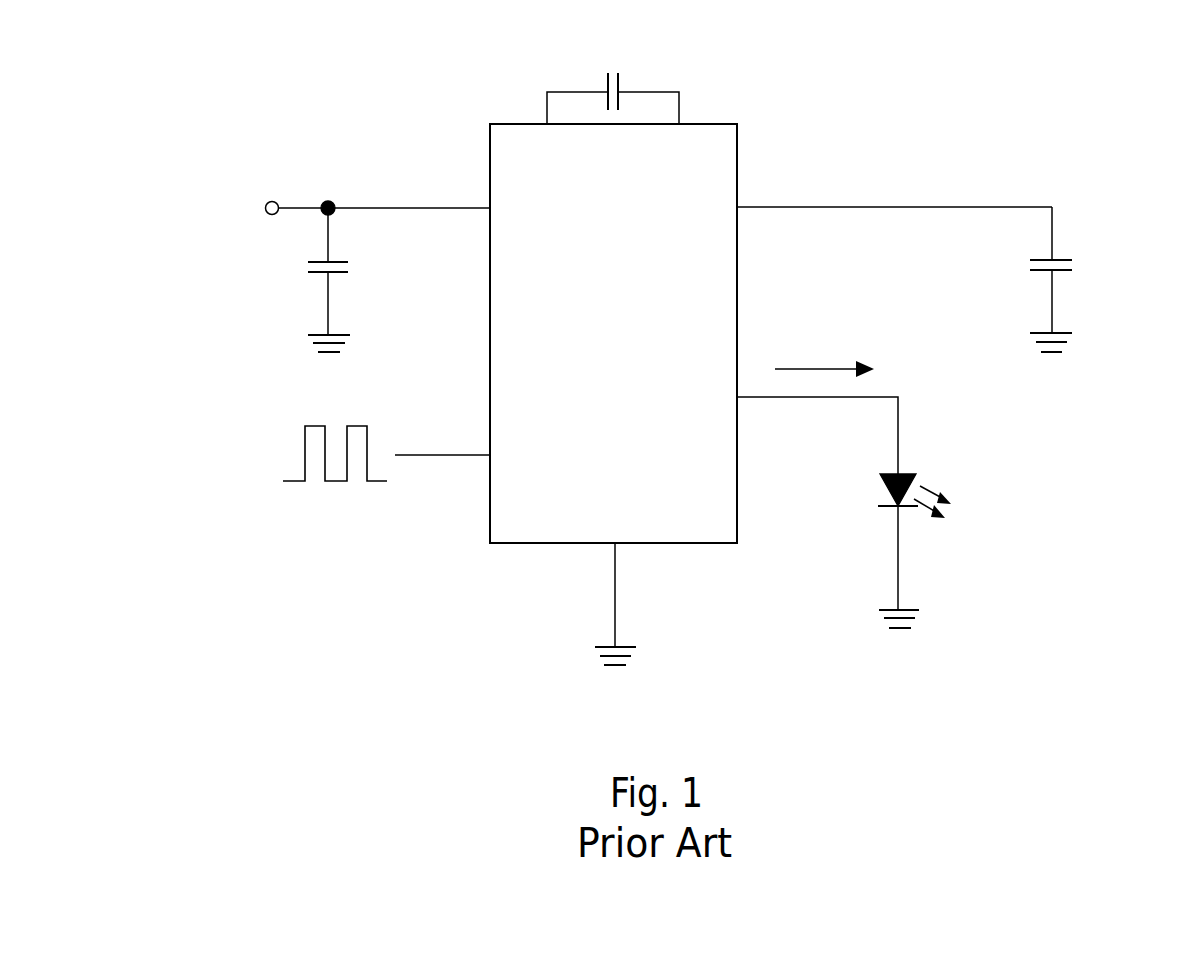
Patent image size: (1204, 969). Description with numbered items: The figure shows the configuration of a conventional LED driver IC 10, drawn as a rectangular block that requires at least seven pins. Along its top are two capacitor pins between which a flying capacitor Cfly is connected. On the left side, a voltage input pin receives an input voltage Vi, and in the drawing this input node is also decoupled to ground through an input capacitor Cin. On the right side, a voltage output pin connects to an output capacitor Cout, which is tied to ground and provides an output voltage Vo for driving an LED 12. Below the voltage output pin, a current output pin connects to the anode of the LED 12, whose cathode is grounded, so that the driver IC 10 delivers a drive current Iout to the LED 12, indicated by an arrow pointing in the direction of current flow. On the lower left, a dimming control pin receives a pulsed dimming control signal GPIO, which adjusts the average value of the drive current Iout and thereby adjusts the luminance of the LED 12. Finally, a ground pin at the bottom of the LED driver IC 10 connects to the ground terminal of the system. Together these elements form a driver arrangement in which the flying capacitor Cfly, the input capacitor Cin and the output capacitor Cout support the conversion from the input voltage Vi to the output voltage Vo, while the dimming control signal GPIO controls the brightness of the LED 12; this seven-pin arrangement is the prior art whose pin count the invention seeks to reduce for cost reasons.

The LED driver IC 10 is at (717, 124).
The LED 12 is at (907, 475).
The flying capacitor Cfly is at (613, 81).
The input capacitor Cin is at (351, 280).
The output capacitor Cout is at (1089, 279).
The input voltage Vi is at (358, 209).
The output voltage Vo is at (906, 187).
The dimming control signal GPIO is at (351, 453).
The drive current Iout is at (824, 349).